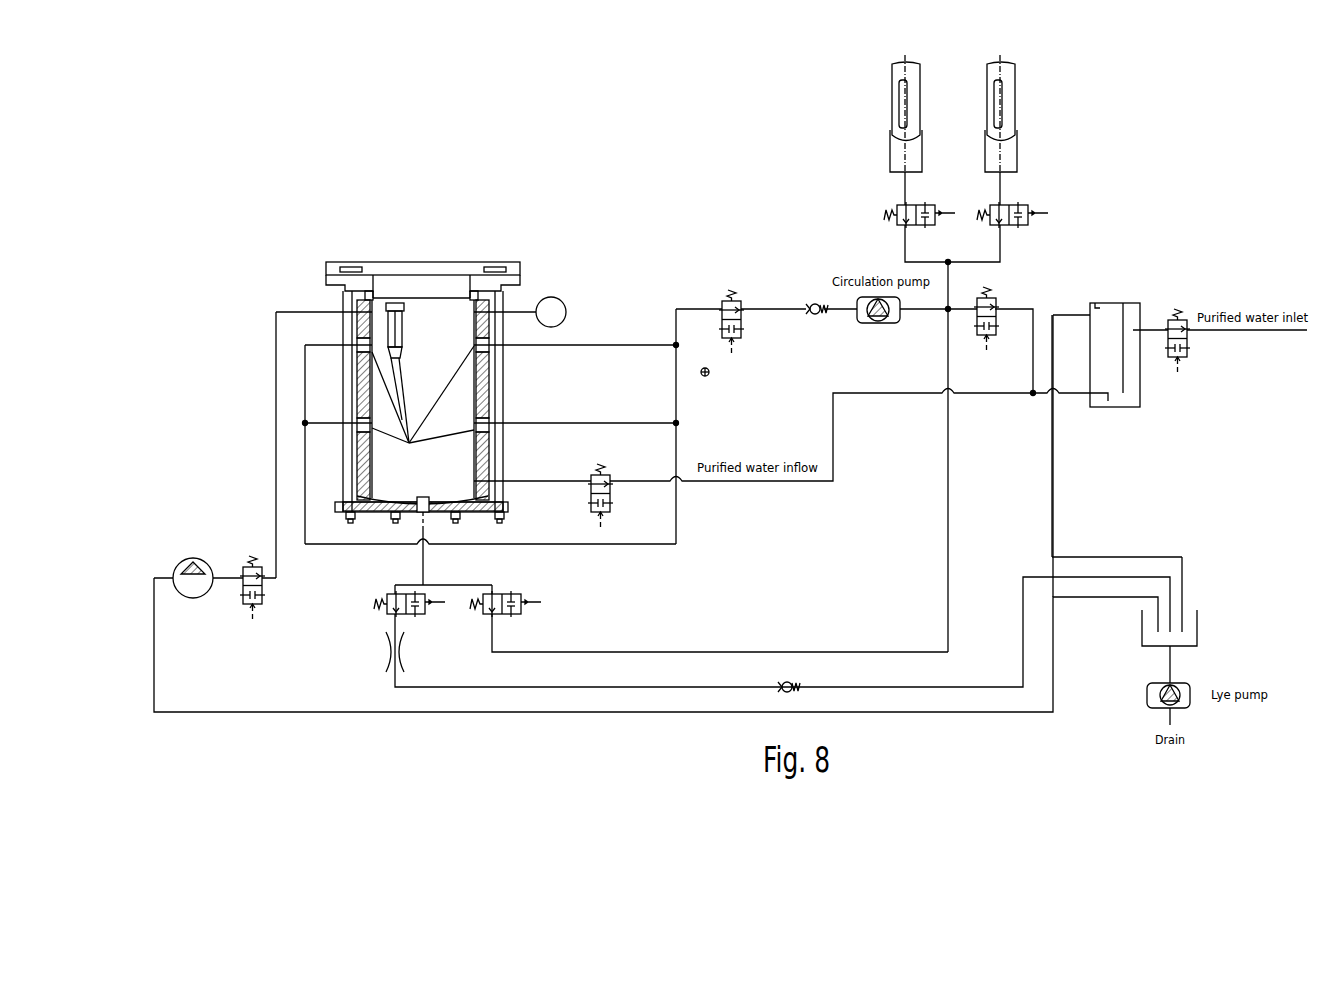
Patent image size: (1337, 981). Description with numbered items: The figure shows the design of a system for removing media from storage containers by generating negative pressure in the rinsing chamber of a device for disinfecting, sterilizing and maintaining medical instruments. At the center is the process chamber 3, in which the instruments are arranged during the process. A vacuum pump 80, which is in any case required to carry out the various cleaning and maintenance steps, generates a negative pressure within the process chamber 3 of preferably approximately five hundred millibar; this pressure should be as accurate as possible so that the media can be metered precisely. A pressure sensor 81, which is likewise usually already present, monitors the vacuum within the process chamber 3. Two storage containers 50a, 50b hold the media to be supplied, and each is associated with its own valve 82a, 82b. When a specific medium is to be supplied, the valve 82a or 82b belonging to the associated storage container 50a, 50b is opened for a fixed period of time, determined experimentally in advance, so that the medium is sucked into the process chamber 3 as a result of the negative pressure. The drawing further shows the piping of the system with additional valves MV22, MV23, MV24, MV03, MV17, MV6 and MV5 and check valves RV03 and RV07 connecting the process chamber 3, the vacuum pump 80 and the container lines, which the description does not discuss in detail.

The process chamber 3 is at (438, 364).
The pressure sensor 81 is at (551, 297).
The vacuum pump 80 is at (192, 599).
The storage container 50a is at (892, 111).
The storage container 50b is at (1015, 109).
The valve 82a is at (897, 225).
The valve 82b is at (1028, 225).
The magnetic valve MV 22 MV22 is at (749, 328).
The magnetic valve MV 23 MV23 is at (987, 338).
The magnetic valve MV 24 MV24 is at (1196, 349).
The magnetic valve MV 03 MV03 is at (619, 500).
The magnetic valve MV 17 MV17 is at (270, 595).
The magnetic valve MV 6 MV6 is at (394, 614).
The magnetic valve MV 5 MV5 is at (515, 613).
The check valve RV 03 RV03 is at (812, 324).
The check valve RV 07 RV07 is at (767, 676).